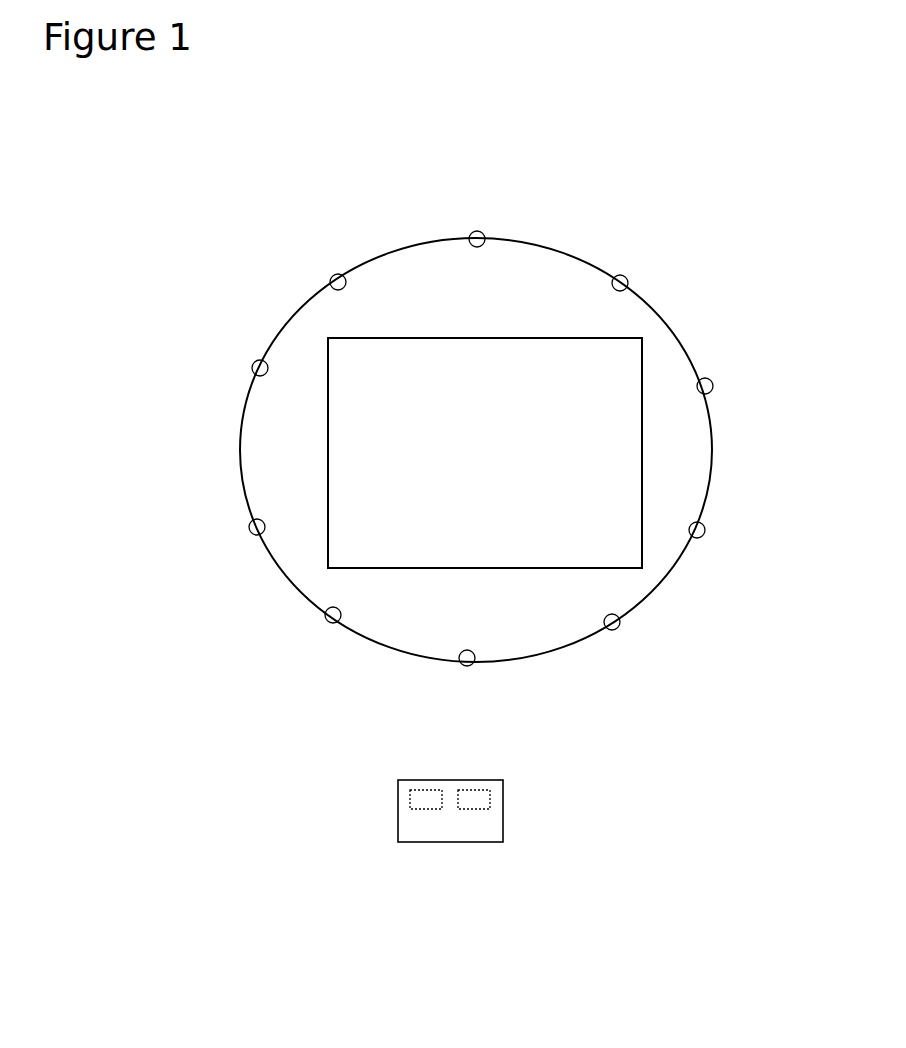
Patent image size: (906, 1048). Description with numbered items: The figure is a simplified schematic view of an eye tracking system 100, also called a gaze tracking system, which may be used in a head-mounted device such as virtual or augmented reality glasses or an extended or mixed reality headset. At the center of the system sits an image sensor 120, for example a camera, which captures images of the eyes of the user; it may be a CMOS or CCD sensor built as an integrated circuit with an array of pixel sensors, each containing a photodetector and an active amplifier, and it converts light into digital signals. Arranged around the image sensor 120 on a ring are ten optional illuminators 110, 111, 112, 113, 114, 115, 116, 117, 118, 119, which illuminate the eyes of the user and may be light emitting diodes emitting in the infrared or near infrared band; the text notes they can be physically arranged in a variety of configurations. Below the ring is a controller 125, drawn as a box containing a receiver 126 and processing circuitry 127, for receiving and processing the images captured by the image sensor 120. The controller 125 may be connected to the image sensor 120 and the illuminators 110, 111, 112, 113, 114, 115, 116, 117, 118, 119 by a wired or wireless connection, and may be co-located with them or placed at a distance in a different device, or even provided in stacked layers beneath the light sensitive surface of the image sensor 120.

The eye tracking system 100 is at (207, 674).
The illuminator 110 is at (257, 360).
The illuminator 111 is at (337, 274).
The illuminator 112 is at (476, 231).
The illuminator 113 is at (626, 277).
The illuminator 114 is at (711, 379).
The illuminator 115 is at (703, 536).
The illuminator 116 is at (617, 629).
The illuminator 117 is at (466, 667).
The illuminator 118 is at (331, 623).
The illuminator 119 is at (253, 535).
The image sensor 120 is at (491, 337).
The controller 125 is at (439, 845).
The receiver 126 is at (410, 790).
The processing circuitry 127 is at (490, 790).